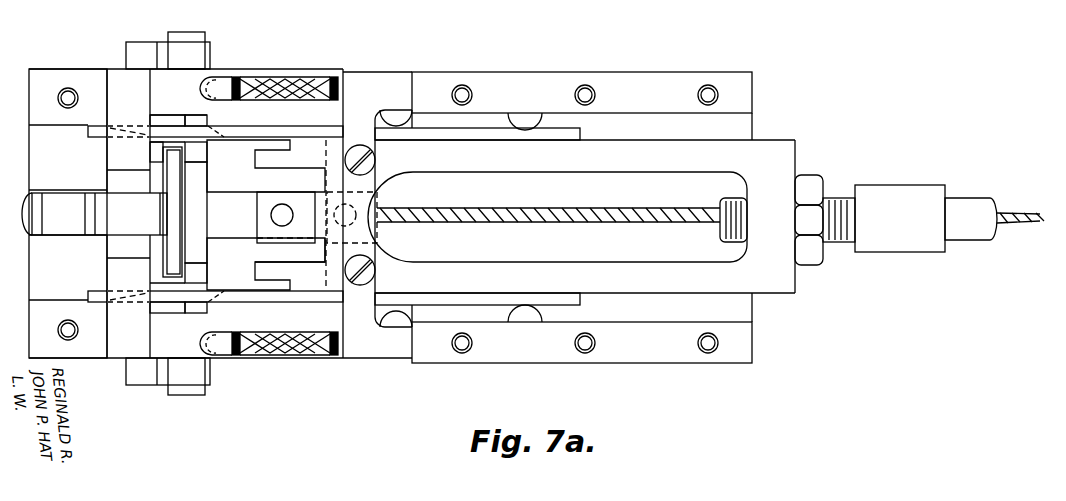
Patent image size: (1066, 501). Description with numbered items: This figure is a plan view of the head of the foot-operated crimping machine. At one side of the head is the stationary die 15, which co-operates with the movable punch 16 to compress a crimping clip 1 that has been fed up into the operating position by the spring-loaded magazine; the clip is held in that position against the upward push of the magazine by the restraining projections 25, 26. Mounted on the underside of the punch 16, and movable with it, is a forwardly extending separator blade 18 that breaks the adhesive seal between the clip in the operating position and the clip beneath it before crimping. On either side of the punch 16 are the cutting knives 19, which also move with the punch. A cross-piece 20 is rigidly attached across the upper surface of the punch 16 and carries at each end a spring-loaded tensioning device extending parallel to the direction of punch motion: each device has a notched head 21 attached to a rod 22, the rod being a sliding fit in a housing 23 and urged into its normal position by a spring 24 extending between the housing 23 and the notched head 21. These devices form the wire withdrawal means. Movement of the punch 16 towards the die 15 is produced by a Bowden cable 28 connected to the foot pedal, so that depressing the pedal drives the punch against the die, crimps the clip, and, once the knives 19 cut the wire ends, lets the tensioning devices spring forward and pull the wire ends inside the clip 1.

The crimping clip 1 is at (160, 147).
The stationary die 15 is at (107, 181).
The movable punch 16 is at (305, 282).
The separator blade 18 is at (233, 238).
The cutting knives 19 is at (222, 131).
The cross-piece 20 is at (360, 352).
The notched head 21 is at (218, 83).
The rod 22 is at (267, 84).
The housing 23 is at (399, 356).
The spring 24 is at (318, 82).
The restraining projection 25 is at (200, 218).
The restraining projection 26 is at (163, 211).
The Bowden cable 28 is at (980, 240).